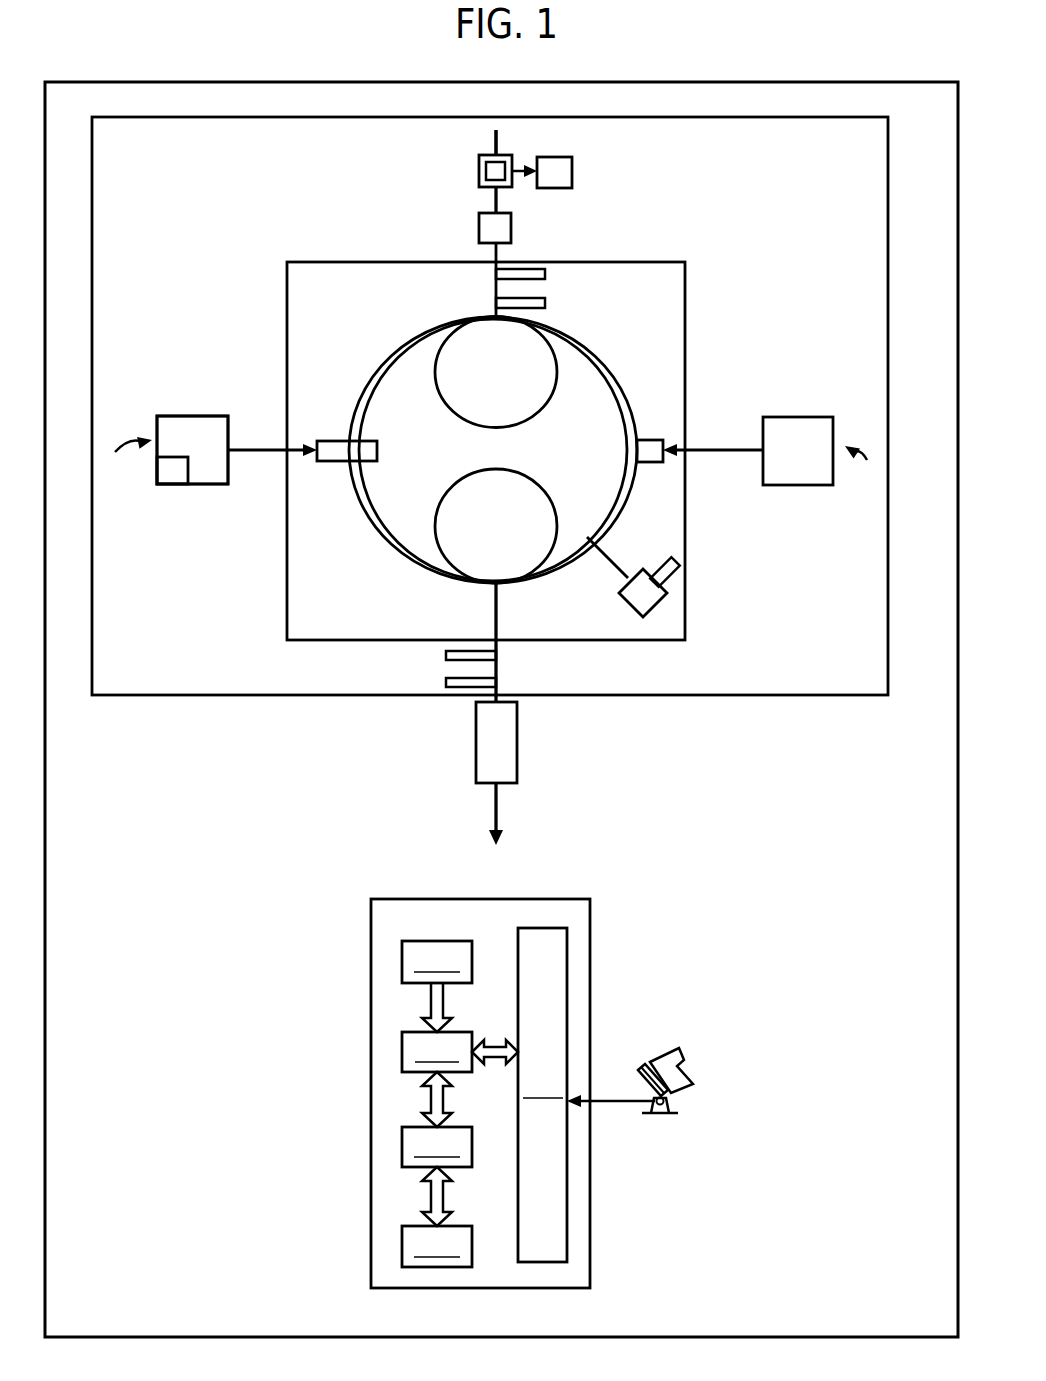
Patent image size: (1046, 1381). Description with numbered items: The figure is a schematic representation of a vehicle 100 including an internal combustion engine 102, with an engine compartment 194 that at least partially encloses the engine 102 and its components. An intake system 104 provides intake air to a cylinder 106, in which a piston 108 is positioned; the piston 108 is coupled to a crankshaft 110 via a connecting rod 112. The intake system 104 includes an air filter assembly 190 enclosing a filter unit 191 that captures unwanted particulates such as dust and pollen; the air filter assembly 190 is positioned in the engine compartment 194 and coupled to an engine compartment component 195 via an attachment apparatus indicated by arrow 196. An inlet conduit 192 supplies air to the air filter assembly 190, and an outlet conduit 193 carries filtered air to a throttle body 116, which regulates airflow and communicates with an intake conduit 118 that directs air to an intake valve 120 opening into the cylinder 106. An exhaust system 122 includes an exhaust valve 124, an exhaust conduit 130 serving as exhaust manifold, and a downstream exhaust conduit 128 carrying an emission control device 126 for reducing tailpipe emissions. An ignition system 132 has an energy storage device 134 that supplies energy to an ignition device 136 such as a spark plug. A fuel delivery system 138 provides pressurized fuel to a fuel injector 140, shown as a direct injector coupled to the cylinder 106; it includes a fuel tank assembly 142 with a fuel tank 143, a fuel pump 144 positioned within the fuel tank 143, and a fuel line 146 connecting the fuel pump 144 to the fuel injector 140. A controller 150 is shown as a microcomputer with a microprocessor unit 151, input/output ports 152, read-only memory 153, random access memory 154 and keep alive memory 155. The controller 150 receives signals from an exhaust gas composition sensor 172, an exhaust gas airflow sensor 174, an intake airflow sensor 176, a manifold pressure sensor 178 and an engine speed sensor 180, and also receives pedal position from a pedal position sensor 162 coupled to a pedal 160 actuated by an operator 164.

The vehicle 100 is at (104, 82).
The internal combustion engine 102 is at (686, 313).
The intake system 104 is at (633, 199).
The cylinder 106 is at (405, 342).
The piston 108 is at (428, 338).
The crankshaft 110 is at (623, 607).
The connecting rod 112 is at (622, 553).
The throttle body 116 is at (512, 227).
The intake conduit 118 is at (495, 255).
The intake valve 120 is at (558, 373).
The exhaust system 122 is at (562, 744).
The exhaust valve 124 is at (557, 508).
The emission control device 126 is at (475, 760).
The exhaust conduit 128 is at (495, 798).
The exhaust conduit 130 is at (493, 612).
The ignition system 132 is at (864, 466).
The energy storage device 134 is at (768, 417).
The ignition device 136 is at (657, 437).
The fuel delivery system 138 is at (124, 458).
The fuel injector 140 is at (347, 440).
The fuel tank assembly 142 is at (175, 390).
The fuel tank 143 is at (203, 416).
The fuel pump 144 is at (188, 465).
The fuel line 146 is at (259, 453).
The controller 150 is at (380, 898).
The microprocessor unit 151 is at (458, 1032).
The input/output ports 152 is at (517, 958).
The read-only memory 153 is at (408, 941).
The random access memory 154 is at (458, 1127).
The keep alive memory 155 is at (458, 1226).
The pedal 160 is at (642, 1080).
The pedal position sensor 162 is at (672, 1105).
The operator 164 is at (688, 1064).
The exhaust gas composition sensor 172 is at (446, 655).
The exhaust gas airflow sensor 174 is at (446, 683).
The intake airflow sensor 176 is at (545, 273).
The manifold pressure sensor 178 is at (545, 302).
The engine speed sensor 180 is at (676, 560).
The air filter assembly 190 is at (480, 173).
The filter unit 191 is at (481, 163).
The inlet conduit 192 is at (498, 135).
The outlet conduit 193 is at (495, 200).
The engine compartment 194 is at (148, 117).
The engine compartment component 195 is at (572, 173).
The attachment apparatus 196 is at (518, 176).